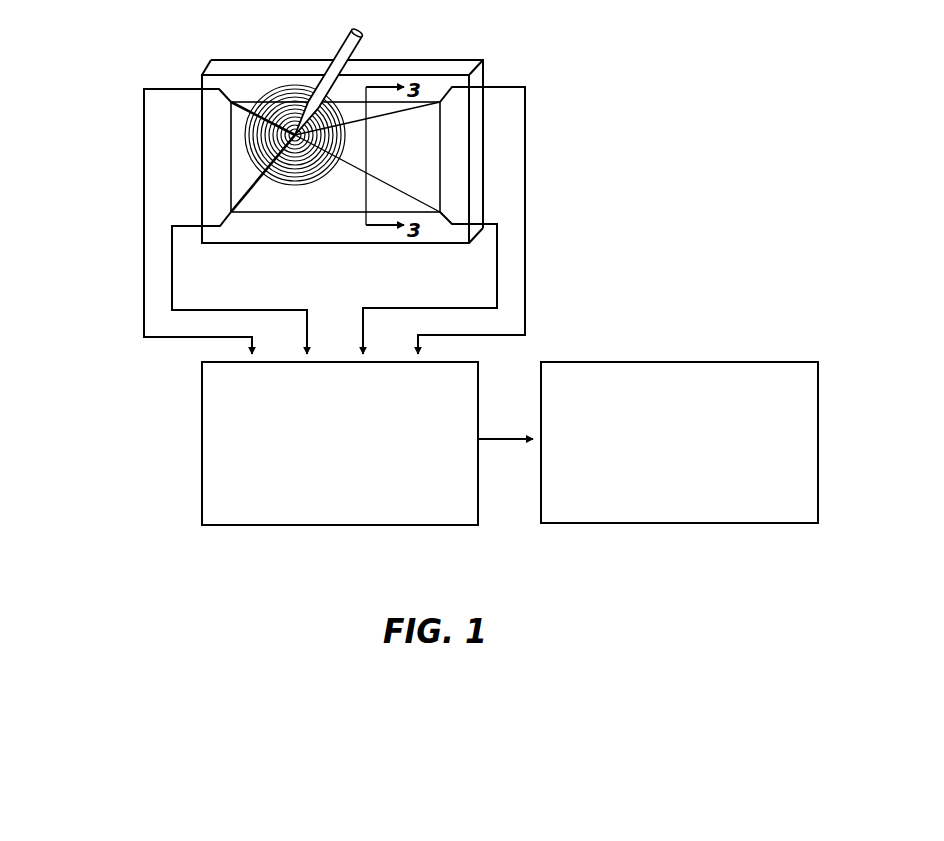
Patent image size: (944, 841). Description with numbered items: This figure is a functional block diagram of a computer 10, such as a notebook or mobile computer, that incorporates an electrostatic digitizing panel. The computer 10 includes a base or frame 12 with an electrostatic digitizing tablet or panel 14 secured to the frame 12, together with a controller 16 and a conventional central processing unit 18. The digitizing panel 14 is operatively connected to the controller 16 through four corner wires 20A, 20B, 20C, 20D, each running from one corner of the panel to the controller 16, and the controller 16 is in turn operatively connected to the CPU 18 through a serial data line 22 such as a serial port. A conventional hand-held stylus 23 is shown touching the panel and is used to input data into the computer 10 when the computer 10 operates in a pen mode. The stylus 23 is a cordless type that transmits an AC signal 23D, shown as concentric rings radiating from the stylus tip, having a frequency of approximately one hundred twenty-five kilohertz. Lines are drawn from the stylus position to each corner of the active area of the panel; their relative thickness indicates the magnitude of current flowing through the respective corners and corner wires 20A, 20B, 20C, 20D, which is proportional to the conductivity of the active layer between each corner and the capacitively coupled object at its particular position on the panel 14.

The computer 10 is at (678, 178).
The base or frame 12 is at (427, 63).
The electrostatic digitizing tablet or panel 14 is at (333, 195).
The controller 16 is at (263, 527).
The central processing unit 18 is at (730, 525).
The corner wire 20A is at (170, 258).
The corner wire 20B is at (143, 117).
The corner wire 20C is at (527, 108).
The corner wire 20D is at (497, 262).
The serial data line 22 is at (499, 441).
The stylus 23 is at (343, 52).
The AC signal 23D is at (262, 86).